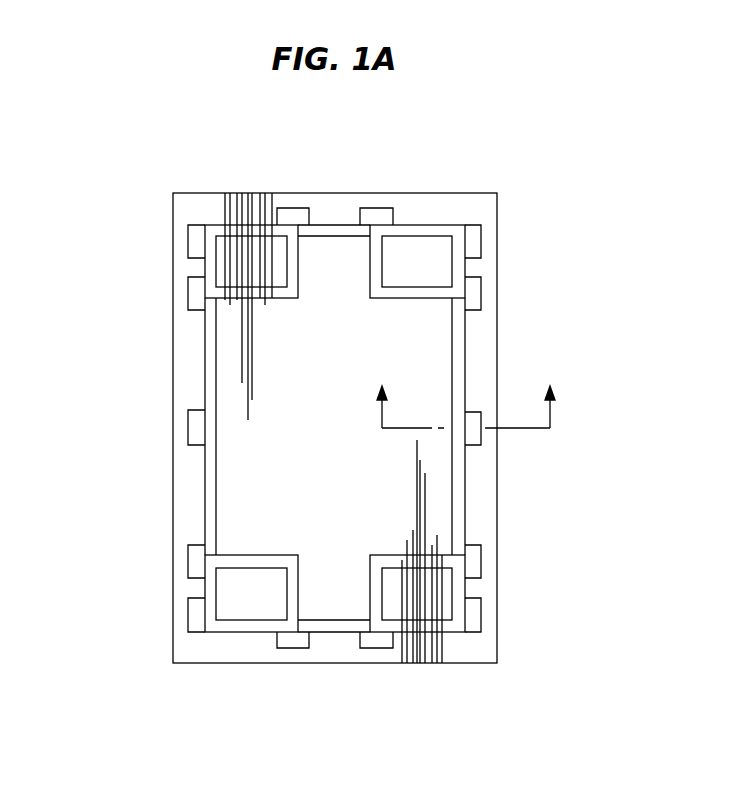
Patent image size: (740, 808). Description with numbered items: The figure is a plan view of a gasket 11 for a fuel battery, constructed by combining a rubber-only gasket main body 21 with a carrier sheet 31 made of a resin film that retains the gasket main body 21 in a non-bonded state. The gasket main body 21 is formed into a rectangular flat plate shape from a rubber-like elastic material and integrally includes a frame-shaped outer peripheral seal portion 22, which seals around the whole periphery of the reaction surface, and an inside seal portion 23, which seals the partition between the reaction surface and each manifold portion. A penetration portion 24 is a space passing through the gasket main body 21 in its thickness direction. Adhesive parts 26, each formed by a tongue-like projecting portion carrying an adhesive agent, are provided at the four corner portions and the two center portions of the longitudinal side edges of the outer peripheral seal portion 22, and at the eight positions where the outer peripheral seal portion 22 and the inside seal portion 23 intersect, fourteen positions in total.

The gasket 11 is at (167, 210).
The gasket main body 21 is at (442, 232).
The outer peripheral seal portion 22 is at (210, 370).
The inside seal portion 23 is at (210, 318).
The penetration portion 24 is at (271, 272).
The adhesive part 26 is at (378, 208).
The carrier sheet 31 is at (492, 627).